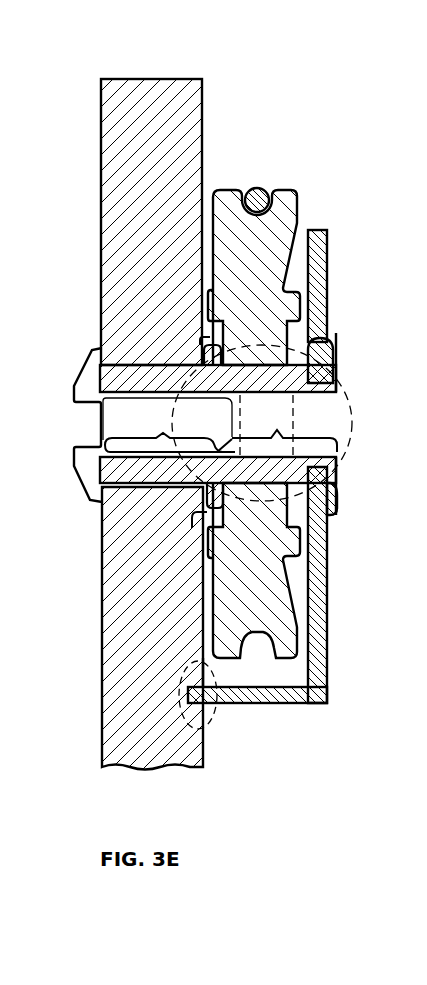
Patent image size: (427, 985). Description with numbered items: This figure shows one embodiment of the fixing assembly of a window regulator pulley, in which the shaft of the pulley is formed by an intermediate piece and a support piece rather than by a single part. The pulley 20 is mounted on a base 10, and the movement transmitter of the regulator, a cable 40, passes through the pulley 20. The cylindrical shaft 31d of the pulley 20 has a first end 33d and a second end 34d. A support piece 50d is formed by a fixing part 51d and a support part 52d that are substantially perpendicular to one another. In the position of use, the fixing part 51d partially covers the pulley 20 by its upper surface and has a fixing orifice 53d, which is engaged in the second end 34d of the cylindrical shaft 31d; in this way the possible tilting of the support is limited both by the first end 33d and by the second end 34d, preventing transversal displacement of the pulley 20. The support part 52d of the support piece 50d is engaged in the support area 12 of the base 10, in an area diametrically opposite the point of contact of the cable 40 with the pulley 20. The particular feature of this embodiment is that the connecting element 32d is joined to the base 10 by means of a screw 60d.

The base 10 is at (165, 110).
The support area 12 is at (207, 672).
The pulley 20 is at (288, 227).
The cable 40 is at (255, 188).
The support piece 50d is at (263, 466).
The fixing part 51d is at (330, 288).
The support part 52d is at (217, 703).
The fixing orifice 53d is at (312, 412).
The cylindrical shaft 31d is at (284, 425).
The connecting element 32d is at (100, 388).
The first end 33d is at (196, 352).
The second end 34d is at (353, 423).
The screw 60d is at (163, 434).